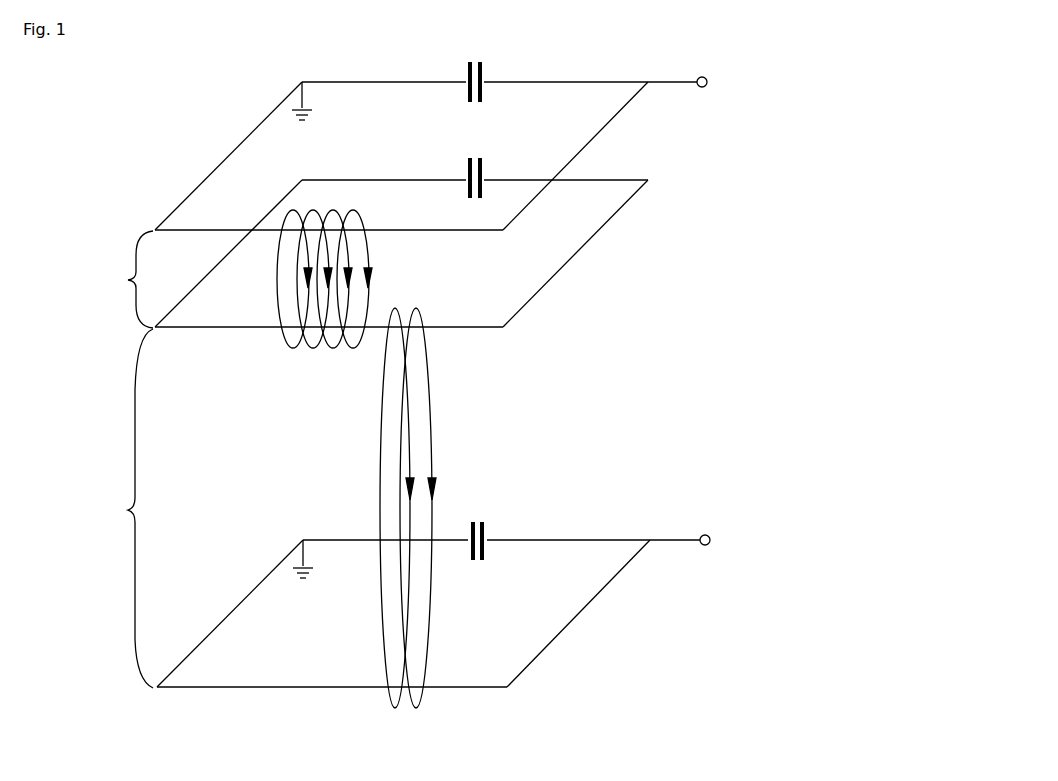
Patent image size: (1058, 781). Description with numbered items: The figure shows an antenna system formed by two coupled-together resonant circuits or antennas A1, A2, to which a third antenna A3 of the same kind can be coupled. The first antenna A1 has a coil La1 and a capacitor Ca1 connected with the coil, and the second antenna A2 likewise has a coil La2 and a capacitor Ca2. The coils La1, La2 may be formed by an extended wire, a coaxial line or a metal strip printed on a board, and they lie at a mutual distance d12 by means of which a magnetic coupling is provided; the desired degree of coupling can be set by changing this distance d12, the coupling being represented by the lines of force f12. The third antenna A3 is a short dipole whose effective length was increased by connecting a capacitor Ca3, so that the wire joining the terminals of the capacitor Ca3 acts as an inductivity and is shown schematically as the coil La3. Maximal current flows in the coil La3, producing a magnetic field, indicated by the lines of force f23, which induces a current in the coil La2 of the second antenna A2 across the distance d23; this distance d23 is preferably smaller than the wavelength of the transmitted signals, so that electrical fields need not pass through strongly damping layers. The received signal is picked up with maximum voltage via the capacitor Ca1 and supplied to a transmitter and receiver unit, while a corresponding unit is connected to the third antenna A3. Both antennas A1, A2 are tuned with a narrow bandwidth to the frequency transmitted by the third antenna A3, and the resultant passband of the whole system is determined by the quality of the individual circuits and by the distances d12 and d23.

The first antenna A1 is at (401, 156).
The second antenna A2 is at (401, 253).
The third antenna A3 is at (403, 613).
The capacitor Ca1 is at (499, 72).
The capacitor Ca2 is at (499, 168).
The capacitor Ca3 is at (502, 531).
The coil La1 is at (329, 244).
The coil La2 is at (329, 341).
The coil La3 is at (332, 701).
The lines of force f12 is at (310, 279).
The lines of force f23 is at (390, 508).
The distance d12 is at (121, 279).
The distance d23 is at (121, 508).